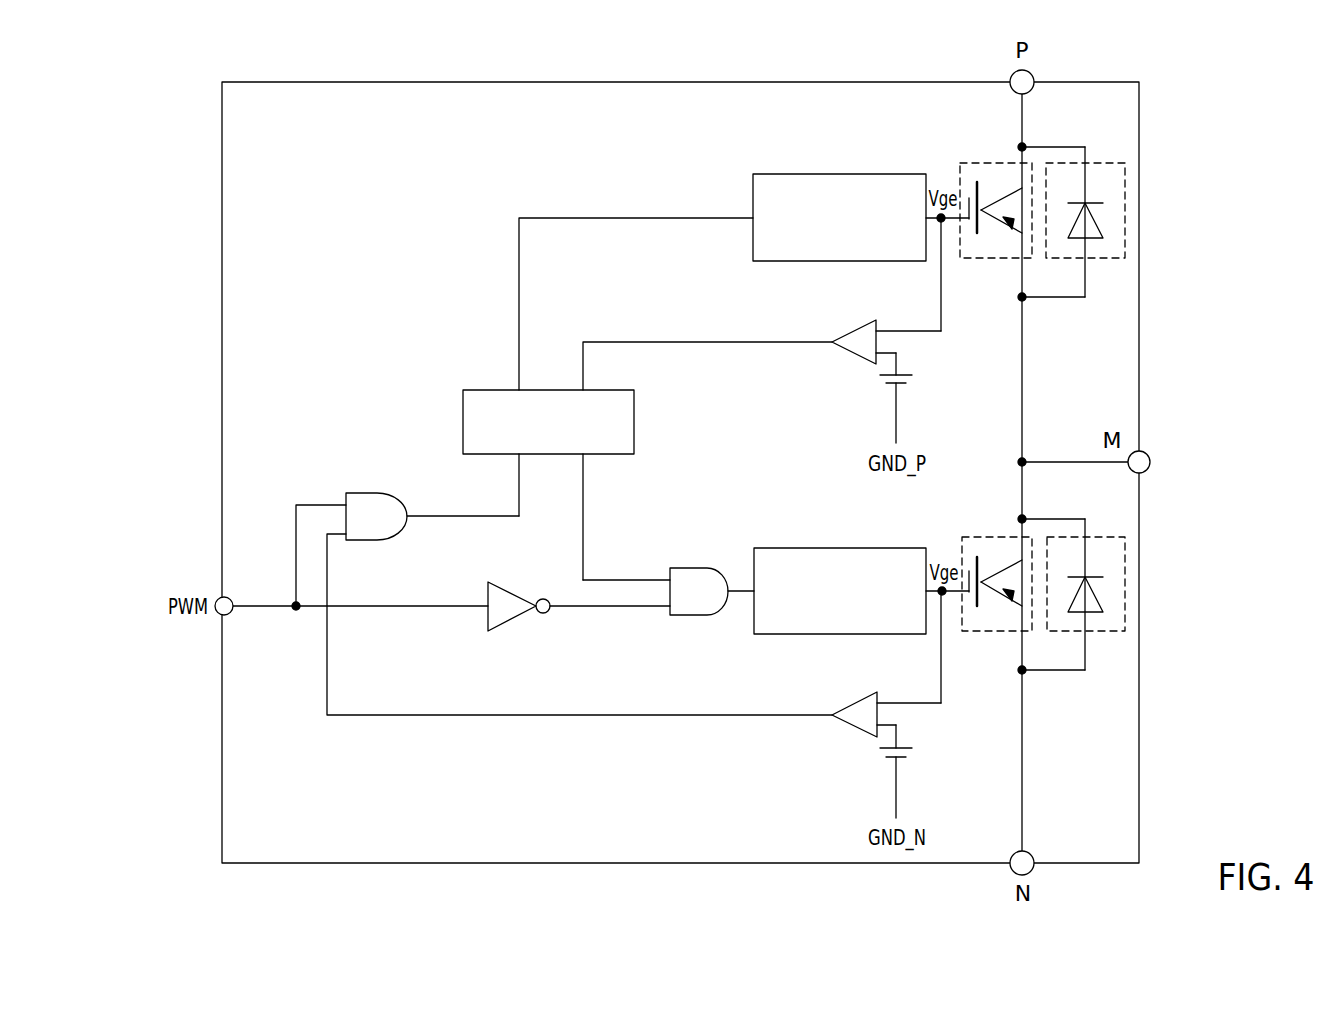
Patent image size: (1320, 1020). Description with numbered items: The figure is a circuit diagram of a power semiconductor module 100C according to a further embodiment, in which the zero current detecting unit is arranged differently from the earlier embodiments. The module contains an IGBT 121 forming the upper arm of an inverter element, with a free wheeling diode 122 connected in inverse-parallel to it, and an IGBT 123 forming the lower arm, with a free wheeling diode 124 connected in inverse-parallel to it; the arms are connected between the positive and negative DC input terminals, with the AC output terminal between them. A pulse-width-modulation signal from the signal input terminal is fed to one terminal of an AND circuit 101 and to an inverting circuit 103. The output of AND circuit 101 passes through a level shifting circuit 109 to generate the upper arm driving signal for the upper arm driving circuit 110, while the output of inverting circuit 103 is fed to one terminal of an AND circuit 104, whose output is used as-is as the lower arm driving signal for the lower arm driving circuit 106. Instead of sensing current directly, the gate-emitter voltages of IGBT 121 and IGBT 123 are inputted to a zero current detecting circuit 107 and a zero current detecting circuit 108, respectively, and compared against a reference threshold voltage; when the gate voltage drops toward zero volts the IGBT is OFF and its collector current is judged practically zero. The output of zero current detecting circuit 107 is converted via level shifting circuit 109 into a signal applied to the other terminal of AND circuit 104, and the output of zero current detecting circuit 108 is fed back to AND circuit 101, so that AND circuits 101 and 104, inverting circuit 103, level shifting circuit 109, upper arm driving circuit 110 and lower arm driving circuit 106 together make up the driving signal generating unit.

The power semiconductor module 100C is at (290, 97).
The AND circuit 101 is at (362, 502).
The inverting circuit 103 is at (513, 613).
The AND circuit 104 is at (685, 577).
The lower arm driving circuit 106 is at (887, 555).
The zero current detecting circuit 107 is at (853, 343).
The zero current detecting circuit 108 is at (853, 720).
The level shifting circuit 109 is at (470, 398).
The upper arm driving circuit 110 is at (883, 183).
The IGBT 121 is at (972, 160).
The free wheeling diode 122 is at (1097, 160).
The IGBT 123 is at (972, 535).
The free wheeling diode 124 is at (1097, 535).